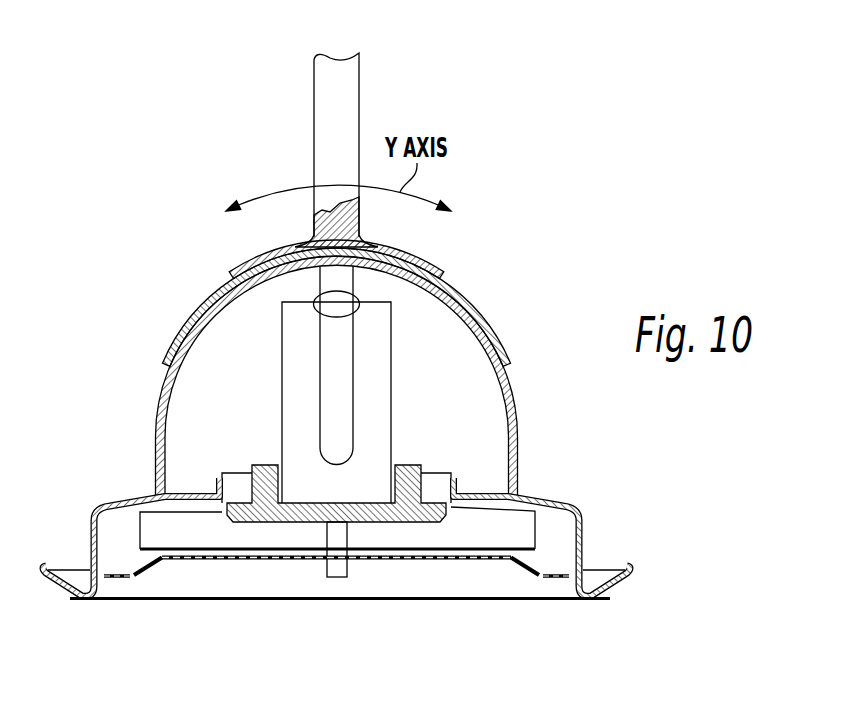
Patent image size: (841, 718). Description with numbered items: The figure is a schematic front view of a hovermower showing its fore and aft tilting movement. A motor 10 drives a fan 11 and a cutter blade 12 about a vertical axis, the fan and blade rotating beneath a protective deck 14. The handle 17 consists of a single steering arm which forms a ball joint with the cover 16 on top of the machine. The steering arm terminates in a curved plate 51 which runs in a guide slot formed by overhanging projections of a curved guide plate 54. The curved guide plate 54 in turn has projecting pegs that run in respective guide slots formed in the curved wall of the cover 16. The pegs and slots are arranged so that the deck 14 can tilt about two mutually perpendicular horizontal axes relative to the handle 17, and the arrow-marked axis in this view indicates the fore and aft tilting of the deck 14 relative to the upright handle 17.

The handle 17 is at (322, 132).
The curved plate 51 is at (430, 262).
The curved guide plate 54 is at (498, 335).
The motor 10 is at (380, 415).
The cover 16 is at (518, 420).
The protective deck 14 is at (582, 533).
The cutter blade 12 is at (150, 567).
The fan 11 is at (237, 537).